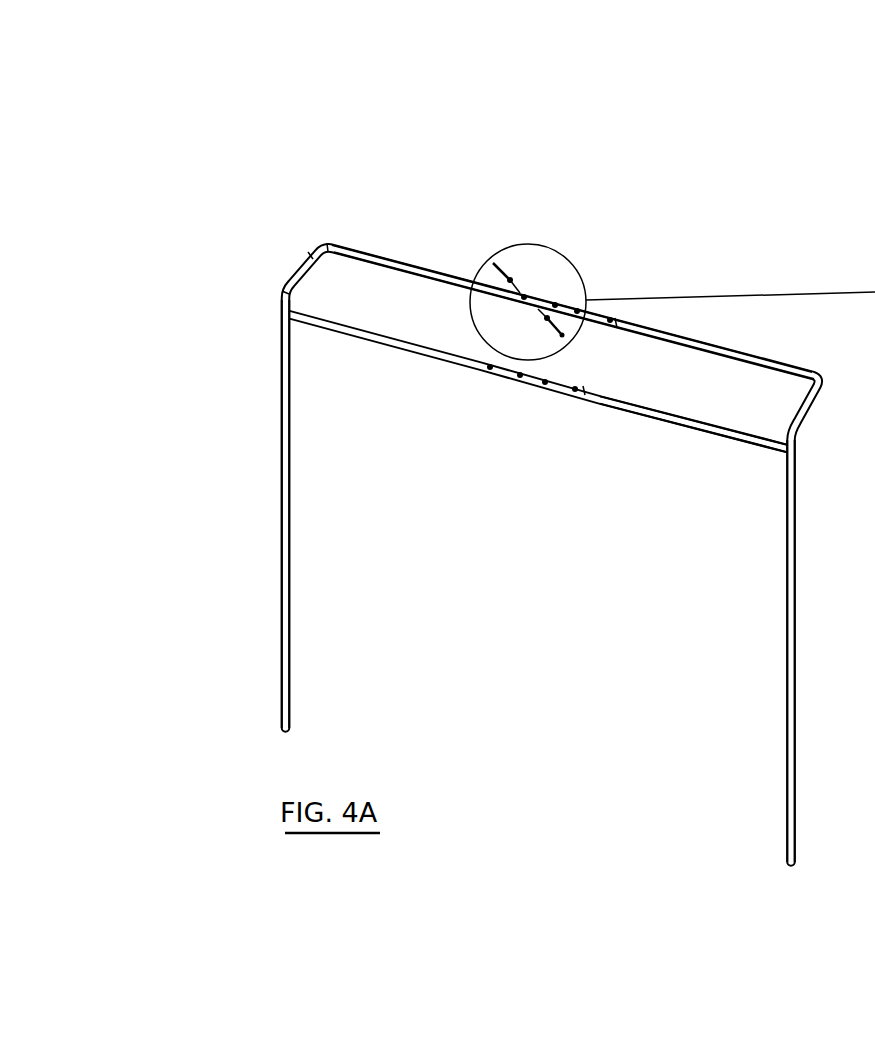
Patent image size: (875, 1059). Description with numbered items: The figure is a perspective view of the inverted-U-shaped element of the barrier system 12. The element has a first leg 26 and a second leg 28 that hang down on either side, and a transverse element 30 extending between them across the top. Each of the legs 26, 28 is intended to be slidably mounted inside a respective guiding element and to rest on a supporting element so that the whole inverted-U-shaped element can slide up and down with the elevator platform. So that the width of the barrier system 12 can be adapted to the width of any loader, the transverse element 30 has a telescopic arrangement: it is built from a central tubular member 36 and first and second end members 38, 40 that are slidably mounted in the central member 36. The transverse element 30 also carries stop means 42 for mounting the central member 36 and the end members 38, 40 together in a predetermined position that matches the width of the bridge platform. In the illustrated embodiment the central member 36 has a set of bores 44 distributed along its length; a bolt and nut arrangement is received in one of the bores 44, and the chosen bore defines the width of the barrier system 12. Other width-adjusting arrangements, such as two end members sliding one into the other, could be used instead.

The barrier system 12 is at (349, 161).
The first leg 26 is at (272, 574).
The second leg 28 is at (778, 740).
The transverse element 30 is at (438, 259).
The central tubular member 36 is at (517, 380).
The first end member 38 is at (391, 343).
The second end member 40 is at (707, 427).
The stop means 42 is at (519, 258).
The bores 44 is at (563, 296).